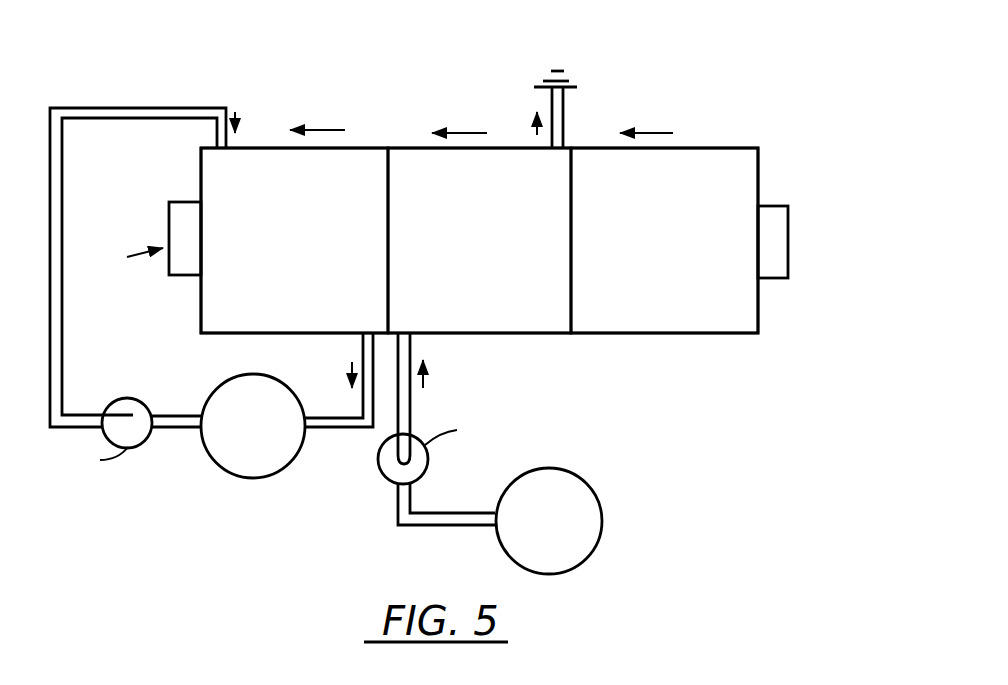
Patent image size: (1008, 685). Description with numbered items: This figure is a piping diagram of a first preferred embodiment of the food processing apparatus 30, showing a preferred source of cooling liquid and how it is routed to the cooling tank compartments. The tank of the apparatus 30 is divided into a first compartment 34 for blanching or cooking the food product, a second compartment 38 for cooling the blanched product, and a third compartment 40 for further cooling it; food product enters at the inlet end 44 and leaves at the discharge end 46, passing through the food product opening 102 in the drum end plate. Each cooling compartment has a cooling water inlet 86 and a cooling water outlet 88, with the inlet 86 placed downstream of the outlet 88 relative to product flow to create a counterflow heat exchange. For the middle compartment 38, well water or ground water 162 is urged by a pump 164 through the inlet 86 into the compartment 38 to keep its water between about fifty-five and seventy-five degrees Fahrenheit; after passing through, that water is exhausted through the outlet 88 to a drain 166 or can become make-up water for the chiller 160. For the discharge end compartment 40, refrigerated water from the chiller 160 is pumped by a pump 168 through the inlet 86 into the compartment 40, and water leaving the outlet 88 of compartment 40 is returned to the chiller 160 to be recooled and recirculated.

The food processing apparatus 30 is at (752, 127).
The first compartment 34 is at (639, 250).
The second compartment 38 is at (457, 250).
The third compartment 40 is at (276, 250).
The inlet end 44 is at (818, 240).
The discharge end 46 is at (124, 258).
The cooling water inlet 86 is at (211, 107).
The cooling water outlet 88 is at (563, 118).
The food product opening 102 is at (168, 208).
The chiller 160 is at (243, 373).
The well water 162 is at (587, 482).
The pump 164 is at (392, 480).
The drain 166 is at (572, 77).
The pump 168 is at (158, 378).